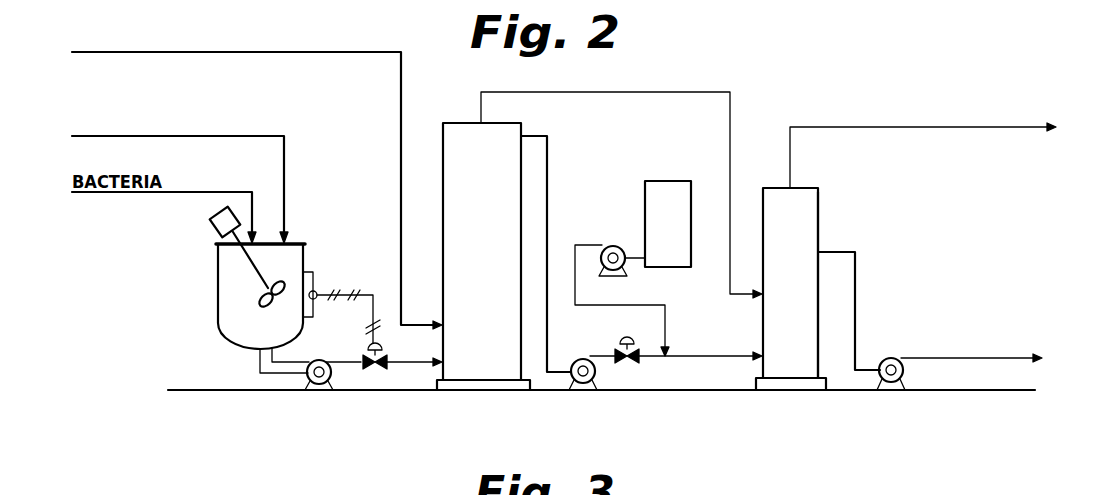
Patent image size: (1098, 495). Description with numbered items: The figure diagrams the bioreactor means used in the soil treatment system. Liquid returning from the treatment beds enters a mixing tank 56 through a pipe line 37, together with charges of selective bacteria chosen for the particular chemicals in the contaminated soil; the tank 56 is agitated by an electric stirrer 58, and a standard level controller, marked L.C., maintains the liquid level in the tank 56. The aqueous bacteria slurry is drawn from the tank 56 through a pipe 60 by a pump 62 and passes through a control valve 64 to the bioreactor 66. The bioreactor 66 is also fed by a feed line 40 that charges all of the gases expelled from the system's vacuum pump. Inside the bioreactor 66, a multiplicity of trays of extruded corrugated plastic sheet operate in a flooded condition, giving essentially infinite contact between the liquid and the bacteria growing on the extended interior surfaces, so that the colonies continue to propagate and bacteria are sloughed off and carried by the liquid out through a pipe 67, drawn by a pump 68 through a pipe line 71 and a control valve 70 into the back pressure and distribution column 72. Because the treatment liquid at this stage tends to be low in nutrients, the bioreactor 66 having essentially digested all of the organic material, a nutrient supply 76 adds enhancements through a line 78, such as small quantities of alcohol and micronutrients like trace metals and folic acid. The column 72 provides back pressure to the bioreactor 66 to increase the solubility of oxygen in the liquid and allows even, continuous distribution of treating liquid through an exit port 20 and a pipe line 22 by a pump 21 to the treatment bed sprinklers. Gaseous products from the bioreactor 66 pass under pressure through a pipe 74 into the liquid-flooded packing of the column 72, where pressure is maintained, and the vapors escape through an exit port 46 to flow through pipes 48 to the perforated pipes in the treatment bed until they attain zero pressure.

The exit port 20 is at (820, 250).
The pump 21 is at (893, 391).
The pipe line 22 is at (857, 316).
The pipe line 37 is at (290, 185).
The feed line 40 is at (372, 99).
The exit port 46 is at (795, 187).
The pipes 48 is at (942, 128).
The mixing tank 56 is at (218, 323).
The electric stirrer 58 is at (214, 226).
The pipe 60 is at (275, 375).
The pump 62 is at (333, 374).
The control valve 64 is at (385, 366).
The bioreactor 66 is at (459, 123).
The pipe 67 is at (548, 163).
The pump 68 is at (596, 375).
The control valve 70 is at (619, 348).
The pipe line 71 is at (704, 350).
The back pressure and distribution column 72 is at (817, 218).
The pipe 74 is at (632, 92).
The nutrient supply 76 is at (645, 212).
The line 78 is at (640, 305).